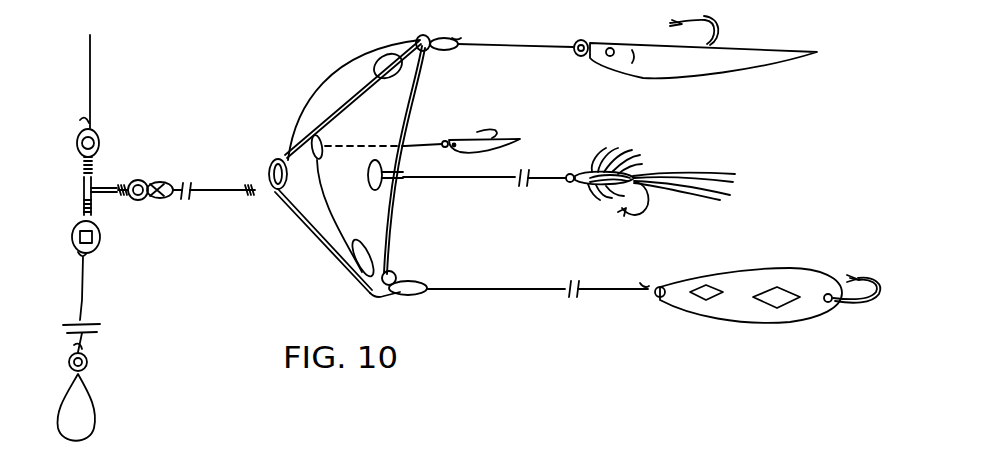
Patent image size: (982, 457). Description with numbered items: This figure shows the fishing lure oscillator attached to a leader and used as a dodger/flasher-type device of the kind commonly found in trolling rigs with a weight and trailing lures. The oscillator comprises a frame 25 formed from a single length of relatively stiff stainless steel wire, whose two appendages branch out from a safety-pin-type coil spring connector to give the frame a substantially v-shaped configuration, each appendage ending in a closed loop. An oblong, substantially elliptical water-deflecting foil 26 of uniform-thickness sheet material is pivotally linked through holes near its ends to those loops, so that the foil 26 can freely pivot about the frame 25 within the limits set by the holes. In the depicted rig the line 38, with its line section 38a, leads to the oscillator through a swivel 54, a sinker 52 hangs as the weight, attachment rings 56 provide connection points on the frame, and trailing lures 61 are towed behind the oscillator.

The line 38 is at (100, 62).
The line section 38a is at (225, 192).
The swivel 54 is at (91, 178).
The sinker 52 is at (83, 417).
The frame 25 is at (295, 140).
The water-deflecting foil 26 is at (353, 78).
The attachment ring 56 is at (306, 155).
The lure 61 is at (735, 38).